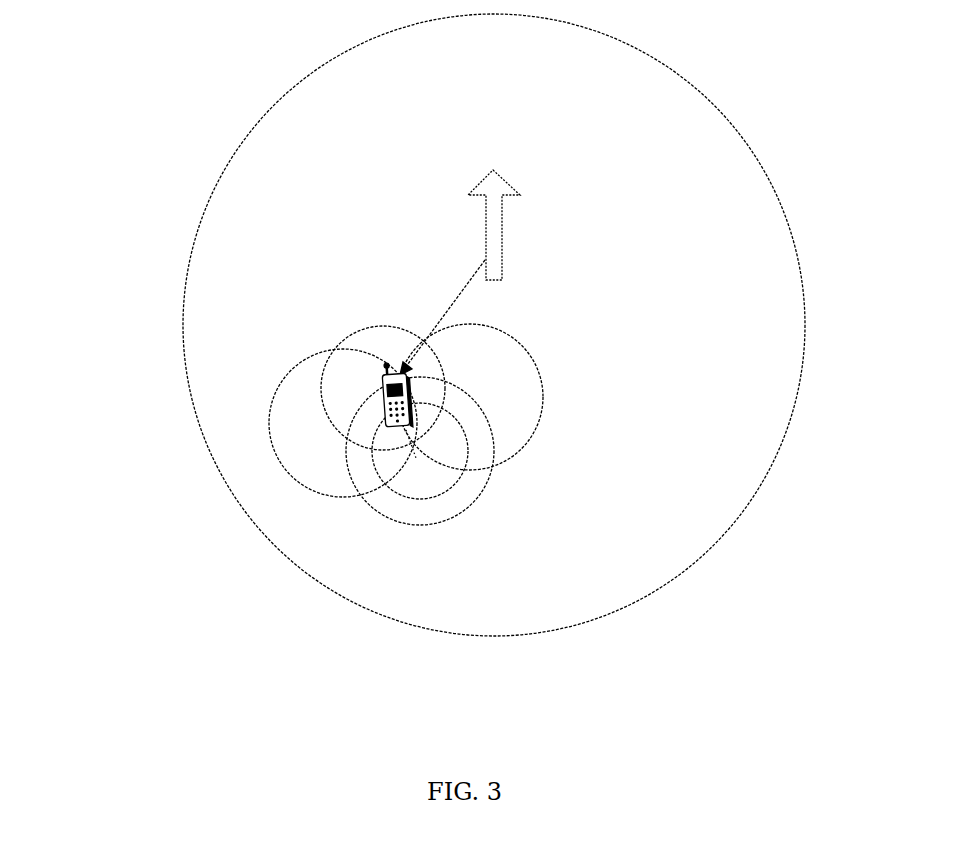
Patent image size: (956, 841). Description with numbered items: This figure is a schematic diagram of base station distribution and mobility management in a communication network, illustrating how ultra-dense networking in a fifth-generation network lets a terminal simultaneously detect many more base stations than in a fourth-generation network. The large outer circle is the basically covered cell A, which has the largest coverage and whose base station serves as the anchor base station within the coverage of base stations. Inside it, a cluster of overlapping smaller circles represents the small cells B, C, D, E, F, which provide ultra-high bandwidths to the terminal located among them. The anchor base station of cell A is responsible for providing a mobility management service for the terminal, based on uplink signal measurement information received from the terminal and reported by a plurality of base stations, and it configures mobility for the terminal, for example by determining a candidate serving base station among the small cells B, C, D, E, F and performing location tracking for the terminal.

The basically covered cell A is at (703, 97).
The small cell B is at (350, 342).
The small cell C is at (272, 403).
The small cell D is at (392, 482).
The small cell E is at (460, 513).
The small cell F is at (518, 453).